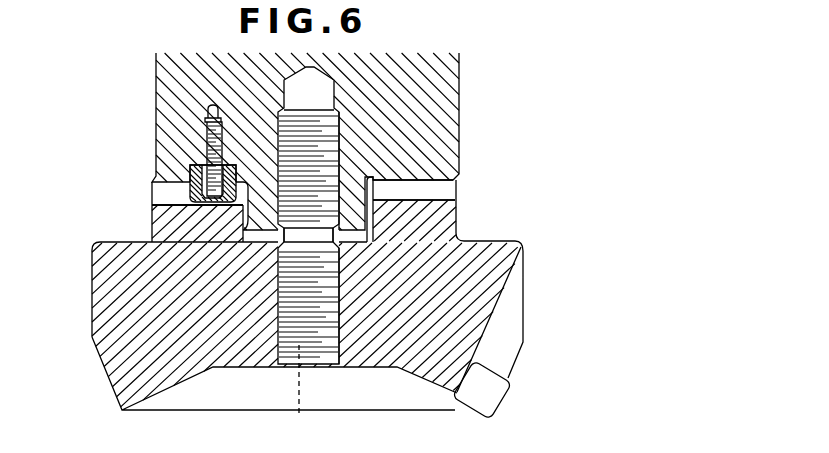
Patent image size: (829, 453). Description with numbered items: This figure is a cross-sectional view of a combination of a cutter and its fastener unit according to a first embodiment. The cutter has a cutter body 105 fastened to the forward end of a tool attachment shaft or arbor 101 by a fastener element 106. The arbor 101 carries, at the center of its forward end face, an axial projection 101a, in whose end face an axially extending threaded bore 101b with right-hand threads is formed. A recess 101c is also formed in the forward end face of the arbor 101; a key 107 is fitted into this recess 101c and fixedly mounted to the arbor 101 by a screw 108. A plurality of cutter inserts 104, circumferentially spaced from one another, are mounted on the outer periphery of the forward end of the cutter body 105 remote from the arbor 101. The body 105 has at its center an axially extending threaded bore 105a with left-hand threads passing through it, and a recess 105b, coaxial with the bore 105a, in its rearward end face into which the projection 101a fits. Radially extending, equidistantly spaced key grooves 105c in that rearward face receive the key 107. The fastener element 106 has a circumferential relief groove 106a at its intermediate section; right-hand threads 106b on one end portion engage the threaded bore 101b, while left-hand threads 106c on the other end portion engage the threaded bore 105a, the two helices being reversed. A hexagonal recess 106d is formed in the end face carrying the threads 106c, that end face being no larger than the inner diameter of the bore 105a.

The arbor 101 is at (461, 130).
The axial projection 101a is at (370, 196).
The threaded bore 101b is at (341, 166).
The recess 101c is at (190, 160).
The cutter inserts 104 is at (514, 383).
The cutter body 105 is at (386, 368).
The threaded bore 105a is at (345, 295).
The recess 105b is at (244, 228).
The key grooves 105c is at (420, 204).
The fastener element 106 is at (432, 256).
The circumferential relief groove 106a is at (350, 238).
The threads 106b is at (341, 160).
The threads 106c is at (345, 305).
The recess 106d is at (346, 348).
The key 107 is at (190, 185).
The screw 108 is at (206, 140).